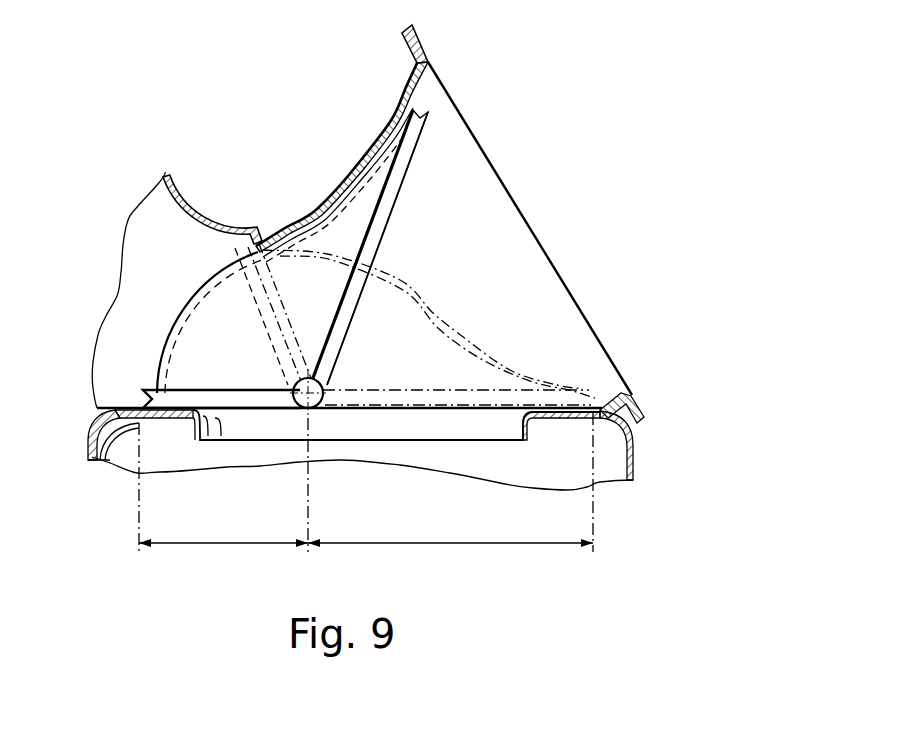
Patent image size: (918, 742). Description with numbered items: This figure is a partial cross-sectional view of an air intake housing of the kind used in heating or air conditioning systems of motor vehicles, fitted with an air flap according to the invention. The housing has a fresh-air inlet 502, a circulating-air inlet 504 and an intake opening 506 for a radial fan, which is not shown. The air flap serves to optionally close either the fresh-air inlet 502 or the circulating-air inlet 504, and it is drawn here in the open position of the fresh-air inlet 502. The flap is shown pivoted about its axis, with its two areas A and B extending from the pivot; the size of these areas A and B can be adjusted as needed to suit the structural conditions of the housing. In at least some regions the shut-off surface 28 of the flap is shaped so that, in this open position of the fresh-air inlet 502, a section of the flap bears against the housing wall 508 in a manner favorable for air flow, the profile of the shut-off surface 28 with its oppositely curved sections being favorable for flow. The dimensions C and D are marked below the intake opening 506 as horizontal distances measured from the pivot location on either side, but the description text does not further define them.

The circulating-air inlet 504 is at (122, 310).
The shut-off surface 28 is at (220, 275).
The housing wall 508 is at (360, 165).
The fresh-air inlet 502 is at (538, 280).
The intake opening 506 is at (427, 445).
The area A is at (388, 203).
The area B is at (237, 400).
The dimension C is at (223, 485).
The dimension D is at (450, 482).